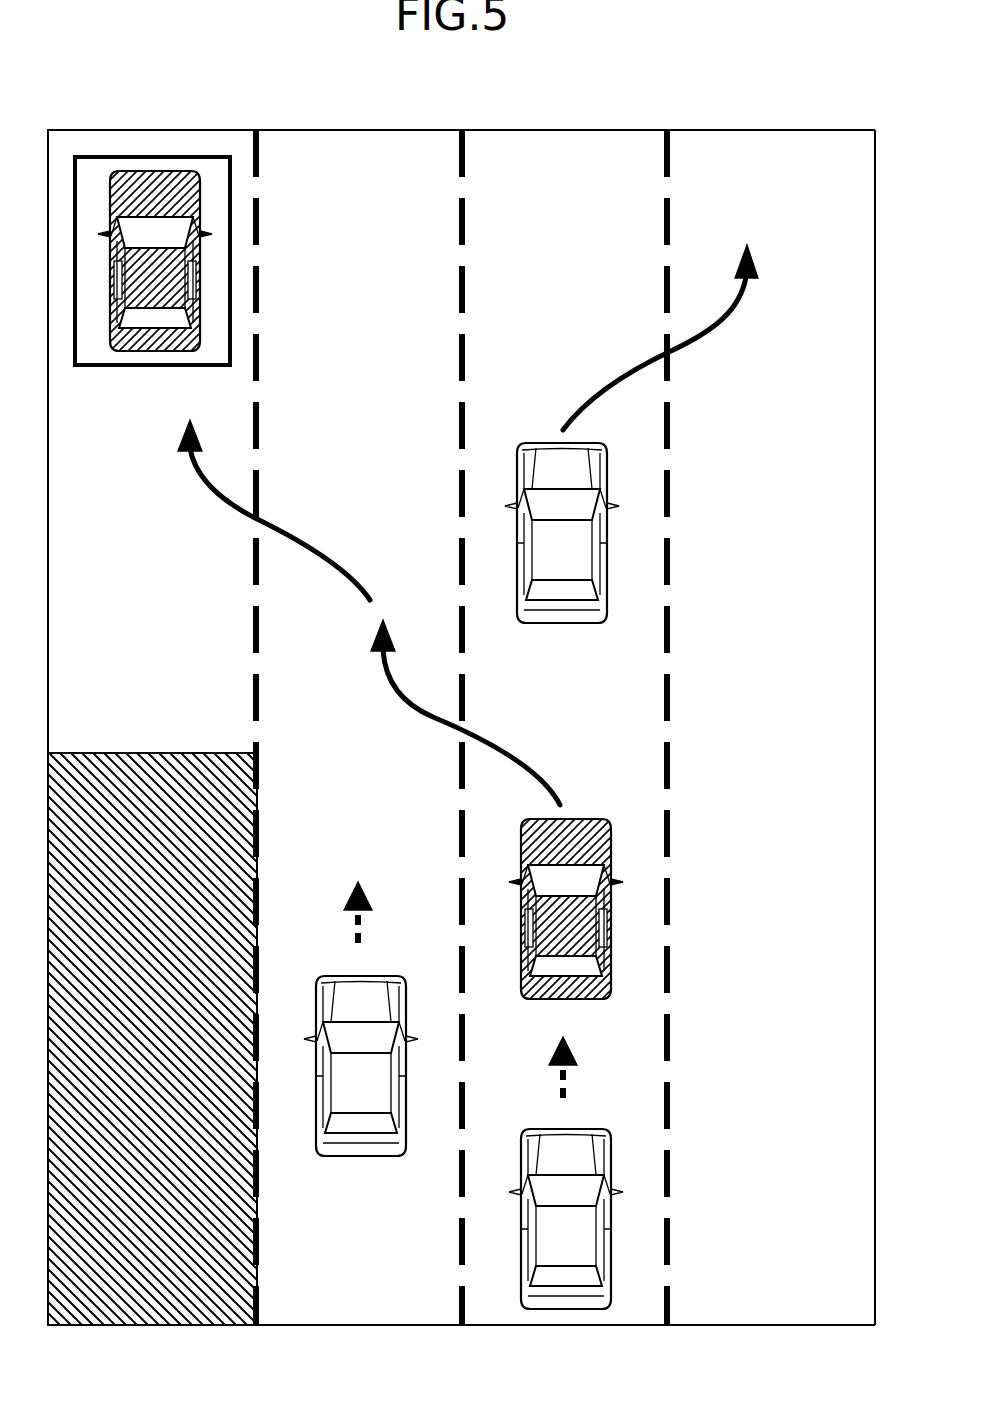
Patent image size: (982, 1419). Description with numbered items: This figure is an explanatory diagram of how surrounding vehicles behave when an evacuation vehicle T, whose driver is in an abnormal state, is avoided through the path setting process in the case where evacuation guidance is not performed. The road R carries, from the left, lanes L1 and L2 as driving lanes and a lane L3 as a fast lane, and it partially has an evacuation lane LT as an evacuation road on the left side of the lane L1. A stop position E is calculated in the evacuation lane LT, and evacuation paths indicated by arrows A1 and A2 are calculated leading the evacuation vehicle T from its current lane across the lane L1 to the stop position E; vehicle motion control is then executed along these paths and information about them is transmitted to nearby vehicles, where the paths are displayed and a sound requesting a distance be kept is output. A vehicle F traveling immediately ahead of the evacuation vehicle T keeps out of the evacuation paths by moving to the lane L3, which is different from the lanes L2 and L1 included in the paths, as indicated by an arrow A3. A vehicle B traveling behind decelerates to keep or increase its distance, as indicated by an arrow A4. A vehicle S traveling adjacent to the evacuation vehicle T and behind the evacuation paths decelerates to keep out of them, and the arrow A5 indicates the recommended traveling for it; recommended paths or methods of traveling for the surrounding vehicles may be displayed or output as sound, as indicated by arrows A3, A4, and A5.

The road R is at (822, 122).
The evacuation lane LT is at (211, 140).
The lane L1 is at (368, 140).
The lane L2 is at (578, 140).
The lane L3 is at (768, 140).
The stop position E is at (88, 153).
The evacuation vehicle T is at (165, 168).
The vehicle F is at (600, 448).
The vehicle S is at (392, 978).
The vehicle B is at (583, 1128).
The arrow A1 is at (465, 712).
The arrow A2 is at (274, 510).
The arrow A3 is at (660, 337).
The arrow A4 is at (578, 1067).
The arrow A5 is at (373, 910).